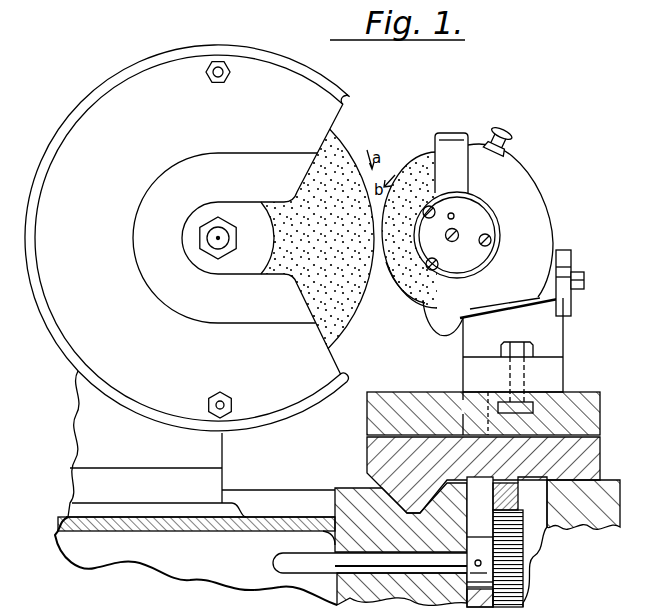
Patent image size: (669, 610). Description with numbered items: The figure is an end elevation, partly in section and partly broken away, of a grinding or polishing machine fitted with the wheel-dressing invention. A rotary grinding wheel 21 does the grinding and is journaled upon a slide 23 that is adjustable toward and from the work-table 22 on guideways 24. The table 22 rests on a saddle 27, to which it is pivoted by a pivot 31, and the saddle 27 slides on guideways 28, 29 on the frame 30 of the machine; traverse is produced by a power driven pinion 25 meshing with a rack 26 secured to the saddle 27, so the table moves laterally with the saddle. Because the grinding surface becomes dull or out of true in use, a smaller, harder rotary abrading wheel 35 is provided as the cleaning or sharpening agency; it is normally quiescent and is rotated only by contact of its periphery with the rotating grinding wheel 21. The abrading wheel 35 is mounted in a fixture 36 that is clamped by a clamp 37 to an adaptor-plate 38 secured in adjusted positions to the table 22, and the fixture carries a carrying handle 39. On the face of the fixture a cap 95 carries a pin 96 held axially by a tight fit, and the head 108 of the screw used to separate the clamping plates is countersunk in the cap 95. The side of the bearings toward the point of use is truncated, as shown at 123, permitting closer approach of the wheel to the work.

The grinding wheel 21 is at (345, 149).
The abrading wheel 35 is at (414, 176).
The fixture 36 is at (552, 219).
The clamp 37 is at (572, 305).
The adaptor-plate 38 is at (562, 340).
The carrying handle 39 is at (510, 135).
The cap 95 is at (470, 258).
The pin 96 is at (454, 215).
The head 108 is at (456, 240).
The truncated side 123 is at (419, 242).
The pivot 31 is at (467, 407).
The table 22 is at (362, 432).
The guideway 28 is at (375, 486).
The saddle 27 is at (595, 465).
The guideway 29 is at (608, 486).
The frame 30 is at (595, 528).
The rack 26 is at (518, 500).
The pinion 25 is at (523, 594).
The slide 23 is at (215, 452).
The guideways 24 is at (226, 498).